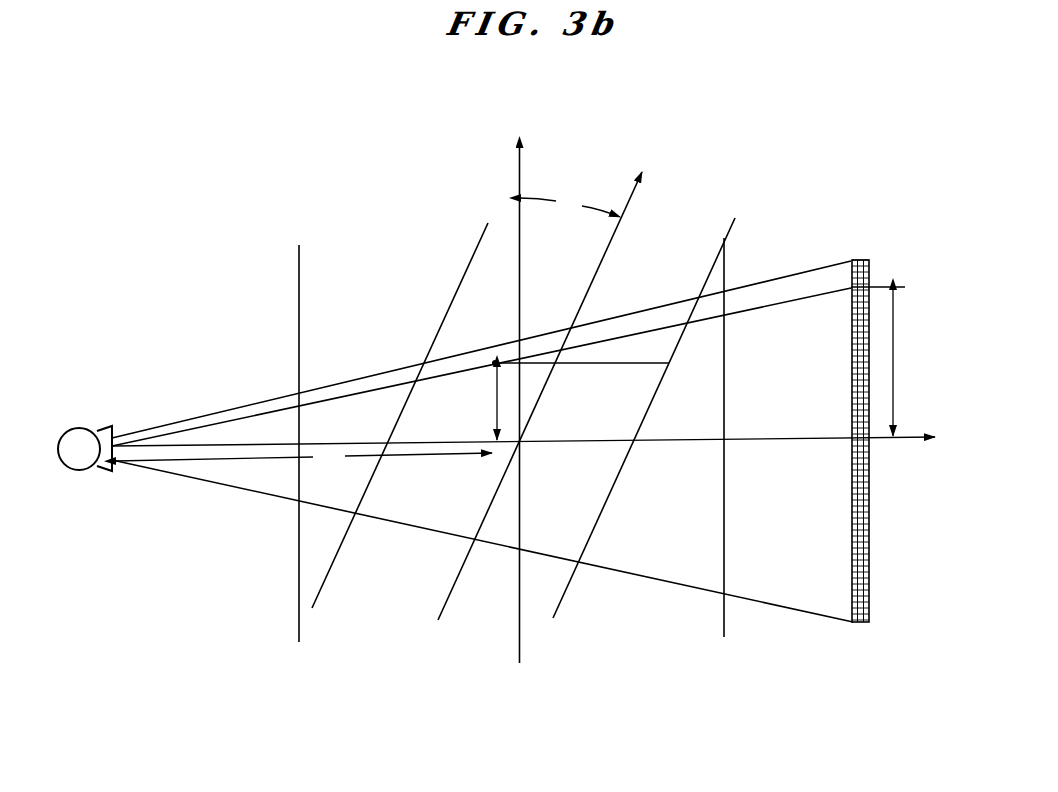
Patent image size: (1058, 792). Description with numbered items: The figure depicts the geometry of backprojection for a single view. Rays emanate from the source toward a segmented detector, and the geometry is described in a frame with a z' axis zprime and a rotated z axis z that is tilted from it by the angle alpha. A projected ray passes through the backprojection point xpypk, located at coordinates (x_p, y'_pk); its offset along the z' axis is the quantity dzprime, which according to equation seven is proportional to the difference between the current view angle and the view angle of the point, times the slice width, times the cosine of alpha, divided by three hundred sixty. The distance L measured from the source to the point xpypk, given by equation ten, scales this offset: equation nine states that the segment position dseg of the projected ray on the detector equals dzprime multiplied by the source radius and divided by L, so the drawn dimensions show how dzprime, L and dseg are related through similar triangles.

The distance from source to backprojection point L is at (303, 462).
The z axis z is at (550, 396).
The z' axis zprime is at (503, 404).
The tilt angle alpha is at (570, 205).
The delta z' offset dzprime is at (562, 401).
The backprojection point (x_p, y'_pk) xpypk is at (495, 363).
The segment position dseg is at (898, 441).
The element source is at (85, 448).